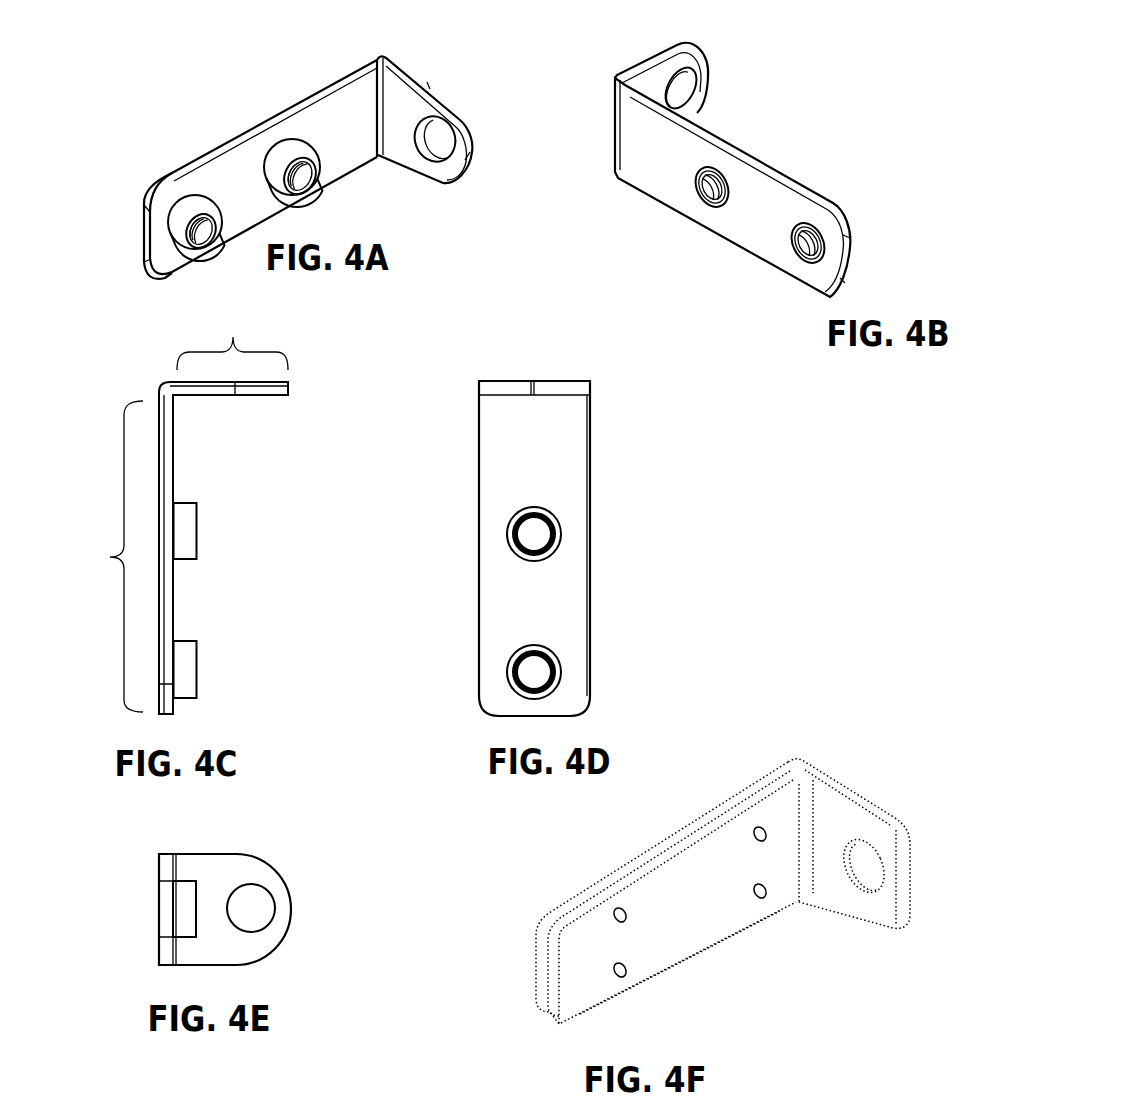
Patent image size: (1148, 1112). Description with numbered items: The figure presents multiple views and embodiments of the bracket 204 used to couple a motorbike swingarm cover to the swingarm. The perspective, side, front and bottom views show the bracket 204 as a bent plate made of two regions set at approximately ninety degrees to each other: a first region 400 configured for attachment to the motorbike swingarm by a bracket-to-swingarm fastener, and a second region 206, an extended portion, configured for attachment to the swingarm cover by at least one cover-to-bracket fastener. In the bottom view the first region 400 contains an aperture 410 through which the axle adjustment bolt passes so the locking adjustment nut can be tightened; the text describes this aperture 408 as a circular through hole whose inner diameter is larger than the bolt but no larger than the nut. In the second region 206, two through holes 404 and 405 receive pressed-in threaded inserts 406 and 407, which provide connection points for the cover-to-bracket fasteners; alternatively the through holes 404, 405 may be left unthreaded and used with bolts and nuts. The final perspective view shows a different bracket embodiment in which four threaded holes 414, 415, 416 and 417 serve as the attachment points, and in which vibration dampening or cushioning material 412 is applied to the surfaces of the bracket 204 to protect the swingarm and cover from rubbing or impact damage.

In FIG. 4A, the bracket 204 is at (270, 110).
In FIG. 4B, the bracket 204 is at (758, 152).
In FIG. 4C, the bracket 204 is at (178, 470).
In FIG. 4D, the bracket 204 is at (593, 495).
In FIG. 4E, the bracket 204 is at (282, 942).
In FIG. 4F, the bracket 204 is at (874, 931).
In FIG. 4C, the second region 206 is at (92, 556).
In FIG. 4C, the first region 400 is at (232, 331).
In FIG. 4B, the through hole 404 is at (706, 208).
In FIG. 4B, the through hole 405 is at (806, 264).
In FIG. 4C, the threaded insert 406 is at (204, 534).
In FIG. 4C, the threaded insert 407 is at (204, 679).
In FIG. 4C, the aperture 408 is at (133, 600).
In FIG. 4E, the aperture 410 is at (261, 880).
In FIG. 4F, the vibration dampening and/or cushioning material 412 is at (745, 931).
In FIG. 4F, the threaded hole 414 is at (608, 974).
In FIG. 4F, the threaded hole 415 is at (617, 907).
In FIG. 4F, the threaded hole 416 is at (761, 824).
In FIG. 4F, the threaded hole 417 is at (762, 881).